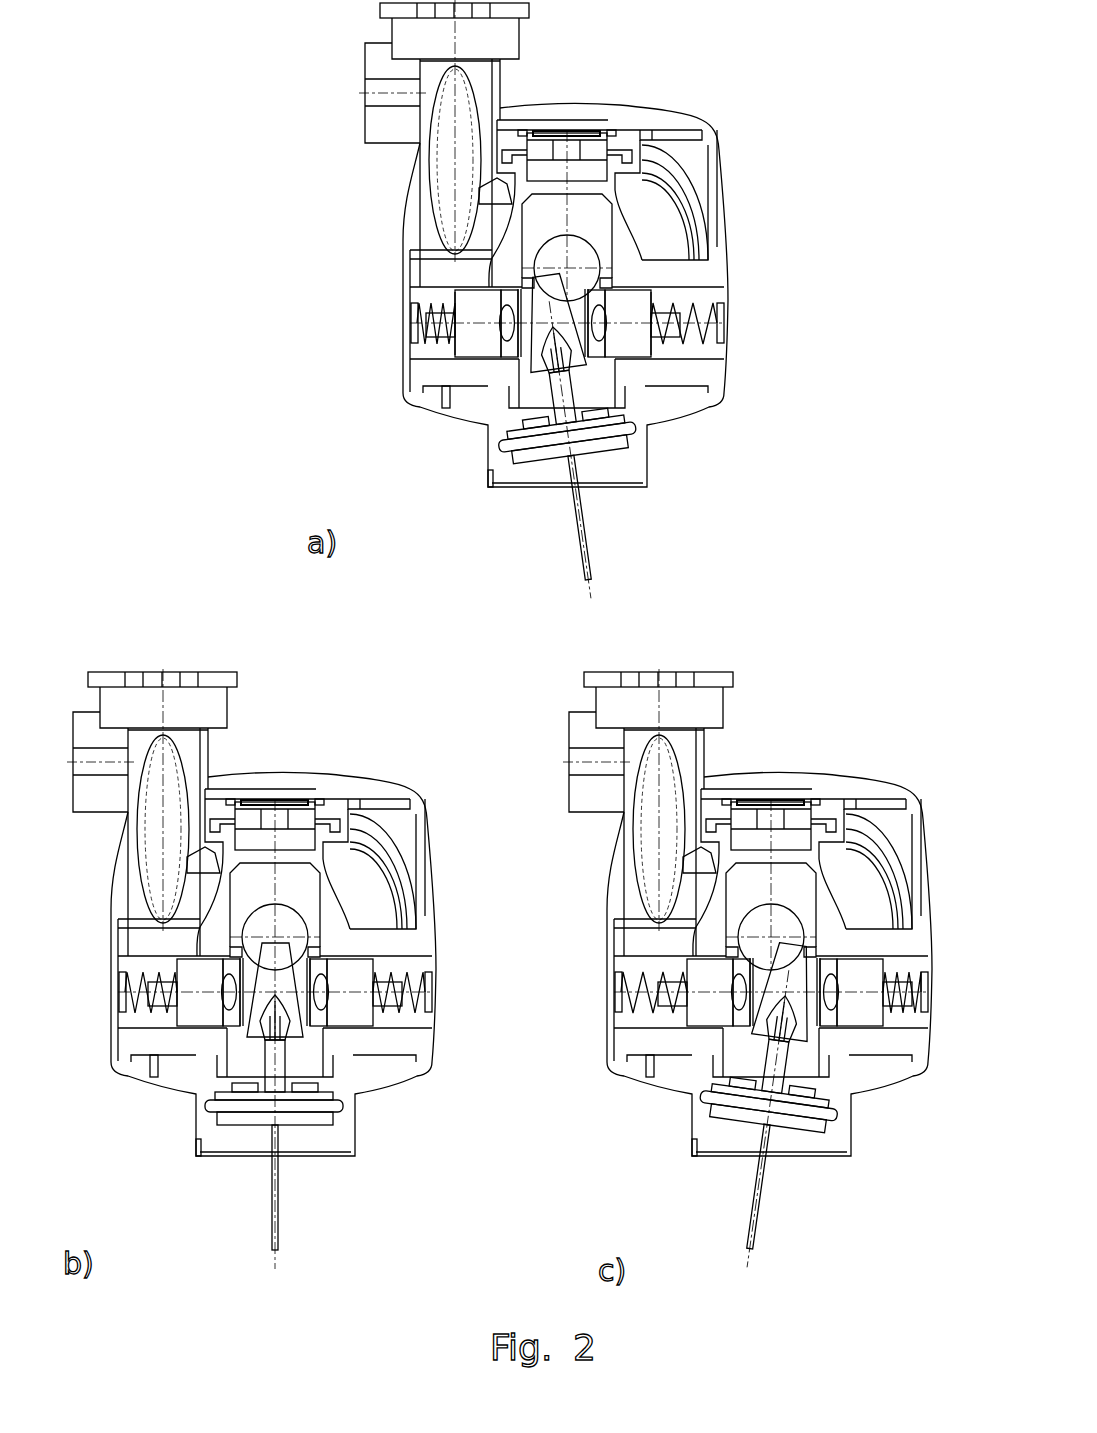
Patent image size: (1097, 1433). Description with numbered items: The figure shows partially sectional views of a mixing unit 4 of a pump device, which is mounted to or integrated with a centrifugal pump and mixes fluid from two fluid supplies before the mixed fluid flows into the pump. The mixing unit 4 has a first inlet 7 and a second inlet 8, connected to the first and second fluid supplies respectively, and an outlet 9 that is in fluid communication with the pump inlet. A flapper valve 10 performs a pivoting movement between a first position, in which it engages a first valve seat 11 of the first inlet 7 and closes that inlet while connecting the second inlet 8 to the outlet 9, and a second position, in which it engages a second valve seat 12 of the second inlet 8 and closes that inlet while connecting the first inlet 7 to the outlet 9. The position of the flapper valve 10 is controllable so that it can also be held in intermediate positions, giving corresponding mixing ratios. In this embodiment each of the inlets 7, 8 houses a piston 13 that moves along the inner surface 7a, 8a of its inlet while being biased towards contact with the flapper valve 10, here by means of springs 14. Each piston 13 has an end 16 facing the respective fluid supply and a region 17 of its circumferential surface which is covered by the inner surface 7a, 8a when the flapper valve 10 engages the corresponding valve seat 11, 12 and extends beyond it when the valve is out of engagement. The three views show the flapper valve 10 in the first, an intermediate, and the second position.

The mixing unit 4 is at (746, 99).
The first inlet 7 is at (438, 292).
The inner surface of the first inlet 7a is at (418, 292).
The second inlet 8 is at (683, 290).
The inner surface of the second inlet 8a is at (715, 292).
The outlet 9 is at (573, 240).
The flapper valve 10 is at (535, 337).
The first valve seat 11 is at (527, 282).
The second valve seat 12 is at (605, 280).
The piston 13 is at (475, 338).
The spring 14 is at (423, 328).
The end of the piston 16 is at (453, 348).
The region of a circumferential surface of the piston 17 is at (505, 307).